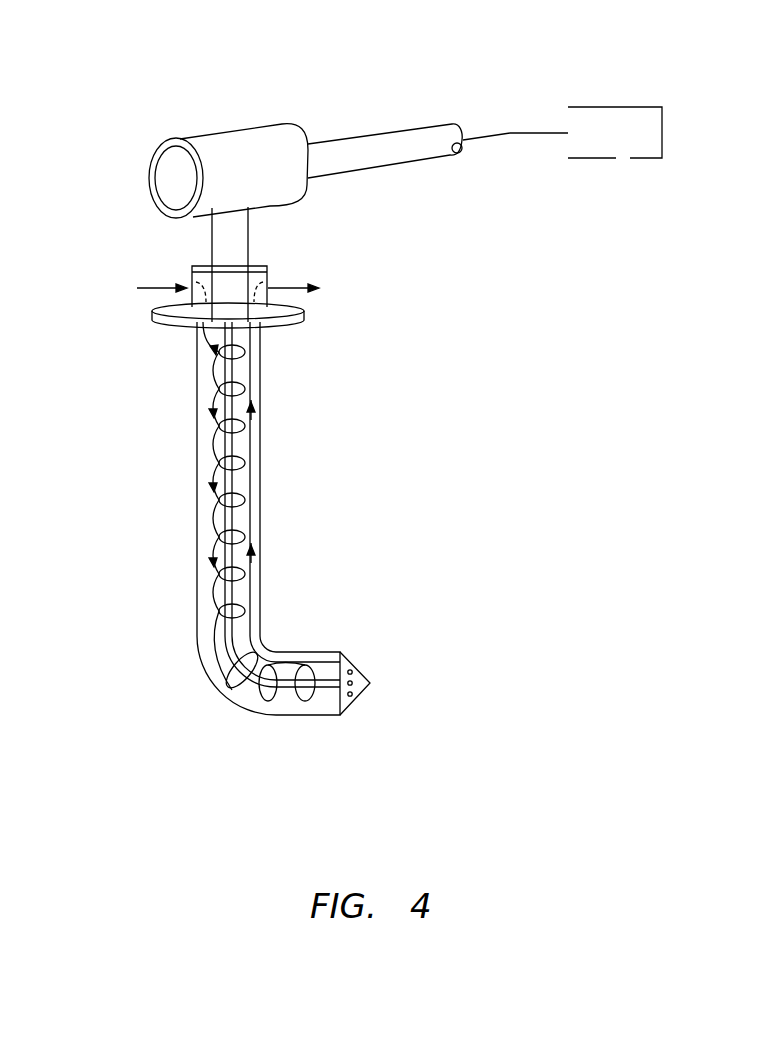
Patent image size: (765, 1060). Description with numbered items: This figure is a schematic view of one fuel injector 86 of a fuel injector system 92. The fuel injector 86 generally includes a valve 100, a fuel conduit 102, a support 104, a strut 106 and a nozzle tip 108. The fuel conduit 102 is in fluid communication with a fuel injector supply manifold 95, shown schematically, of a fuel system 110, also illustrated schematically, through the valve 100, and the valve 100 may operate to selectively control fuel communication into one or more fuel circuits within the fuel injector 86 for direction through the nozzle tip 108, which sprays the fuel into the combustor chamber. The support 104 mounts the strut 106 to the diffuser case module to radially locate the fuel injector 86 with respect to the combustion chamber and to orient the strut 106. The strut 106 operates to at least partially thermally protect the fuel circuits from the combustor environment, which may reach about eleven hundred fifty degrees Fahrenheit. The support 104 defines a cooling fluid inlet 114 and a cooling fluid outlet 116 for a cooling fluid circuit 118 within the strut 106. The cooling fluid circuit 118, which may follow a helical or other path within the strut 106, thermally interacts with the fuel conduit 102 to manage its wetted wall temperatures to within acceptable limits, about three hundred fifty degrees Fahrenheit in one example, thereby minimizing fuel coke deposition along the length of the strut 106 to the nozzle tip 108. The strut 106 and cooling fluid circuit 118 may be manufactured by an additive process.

The fuel injector 86 is at (332, 526).
The fuel injector system 92 is at (121, 110).
The fuel injector supply manifold 95 is at (360, 101).
The valve 100 is at (247, 120).
The fuel conduit 102 is at (243, 236).
The support 104 is at (308, 316).
The strut 106 is at (261, 413).
The nozzle tip 108 is at (350, 700).
The fuel system 110 is at (596, 143).
The cooling fluid inlet 114 is at (190, 284).
The cooling fluid outlet 116 is at (268, 284).
The cooling fluid circuit 118 is at (213, 450).